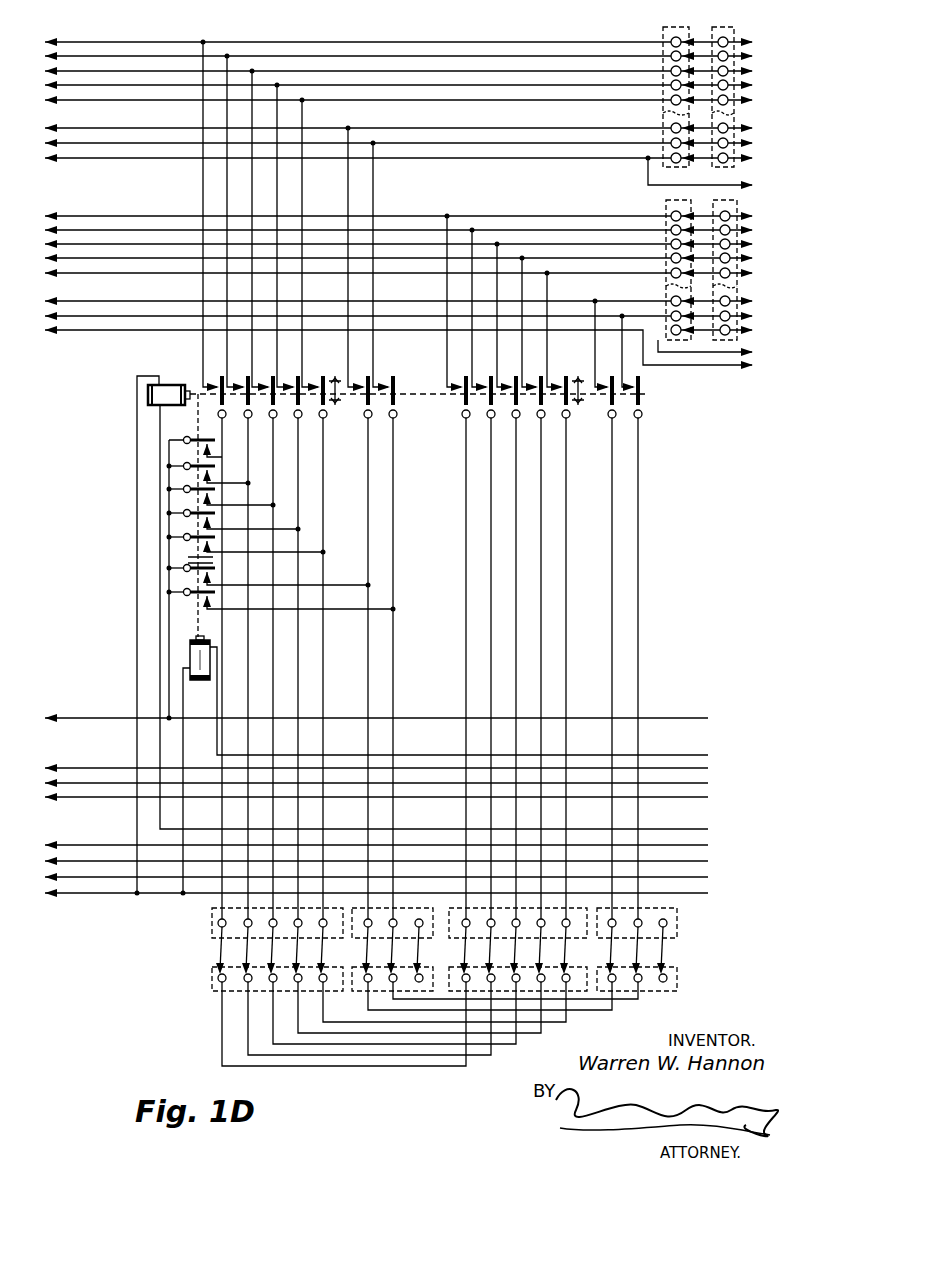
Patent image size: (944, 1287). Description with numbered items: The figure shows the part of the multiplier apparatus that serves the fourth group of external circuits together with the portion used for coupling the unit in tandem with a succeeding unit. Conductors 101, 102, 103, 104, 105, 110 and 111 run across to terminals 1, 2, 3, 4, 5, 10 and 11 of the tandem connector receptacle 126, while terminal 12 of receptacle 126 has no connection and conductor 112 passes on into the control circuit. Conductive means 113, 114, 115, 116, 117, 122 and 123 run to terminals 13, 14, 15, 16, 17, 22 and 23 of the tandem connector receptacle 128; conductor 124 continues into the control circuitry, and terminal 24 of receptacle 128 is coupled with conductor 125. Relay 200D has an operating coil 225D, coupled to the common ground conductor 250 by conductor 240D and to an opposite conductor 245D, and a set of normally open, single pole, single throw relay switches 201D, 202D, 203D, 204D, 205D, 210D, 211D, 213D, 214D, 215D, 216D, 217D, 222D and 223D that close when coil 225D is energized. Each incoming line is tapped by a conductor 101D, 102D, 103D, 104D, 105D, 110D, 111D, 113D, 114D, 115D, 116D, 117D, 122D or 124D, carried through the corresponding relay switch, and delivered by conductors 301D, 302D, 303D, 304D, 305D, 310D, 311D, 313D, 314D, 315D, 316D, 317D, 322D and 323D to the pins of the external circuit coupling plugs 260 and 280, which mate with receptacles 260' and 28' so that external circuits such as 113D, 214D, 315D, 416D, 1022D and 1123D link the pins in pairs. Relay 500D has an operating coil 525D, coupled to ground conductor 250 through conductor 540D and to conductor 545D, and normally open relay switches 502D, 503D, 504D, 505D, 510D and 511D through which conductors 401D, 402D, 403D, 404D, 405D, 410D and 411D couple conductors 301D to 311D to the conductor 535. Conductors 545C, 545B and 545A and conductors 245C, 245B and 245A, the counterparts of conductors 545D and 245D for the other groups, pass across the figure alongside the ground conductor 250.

The conductor 101 is at (69, 45).
The conductor 102 is at (69, 59).
The conductor 103 is at (69, 74).
The conductor 104 is at (69, 88).
The conductor 105 is at (69, 103).
The conductor 110 is at (69, 131).
The conductor 111 is at (69, 146).
The conductor 112 is at (69, 161).
The conductive means 113 is at (69, 219).
The conductive means 114 is at (69, 233).
The conductive means 115 is at (69, 247).
The conductive means 116 is at (69, 261).
The conductive means 117 is at (69, 276).
The conductive means 122 is at (71, 304).
The conductive means 123 is at (71, 319).
The conductor 124 is at (71, 333).
The conductor 125 is at (692, 352).
The tandem connector receptacle 126 is at (672, 24).
The tandem connector receptacle 128 is at (667, 198).
The terminal 1 is at (671, 42).
The terminal 2 is at (671, 56).
The terminal 3 is at (671, 71).
The terminal 4 is at (671, 85).
The terminal 5 is at (671, 100).
The terminal 10 is at (671, 128).
The terminal 11 is at (671, 143).
The terminal 12 is at (671, 158).
The terminal 13 is at (671, 216).
The terminal 14 is at (671, 230).
The terminal 15 is at (671, 244).
The terminal 16 is at (671, 258).
The terminal 17 is at (671, 273).
The terminal 22 is at (671, 301).
The terminal 23 is at (671, 316).
The terminal 24 is at (671, 330).
The conductor 101D is at (203, 186).
The conductor 102D is at (230, 208).
The conductor 103D is at (256, 216).
The conductor 104D is at (282, 198).
The conductor 105D is at (310, 208).
The conductor 110D is at (348, 178).
The conductor 111D is at (373, 200).
The conductor 113D is at (449, 224).
The conductor 114D is at (475, 238).
The conductor 115D is at (514, 254).
The conductor 116D is at (536, 268).
The conductor 117D is at (548, 288).
The conductor 122D is at (596, 312).
The conductor 124D is at (596, 350).
The relay 200D is at (147, 392).
The operating coil 225D is at (165, 375).
The conductor 240D is at (137, 516).
The conductor 245D is at (160, 541).
The conductor 535 is at (86, 717).
The relay switch 201D is at (219, 415).
The relay switch 202D is at (242, 397).
The relay switch 203D is at (269, 397).
The relay switch 204D is at (296, 414).
The relay switch 205D is at (324, 417).
The relay switch 210D is at (364, 420).
The relay switch 211D is at (397, 418).
The relay switch 213D is at (464, 412).
The relay switch 214D is at (487, 416).
The relay switch 215D is at (512, 414).
The relay switch 216D is at (537, 414).
The relay switch 217D is at (563, 416).
The relay switch 222D is at (608, 414).
The relay switch 223D is at (642, 414).
The conductor 301D is at (240, 668).
The conductor 302D is at (265, 668).
The conductor 303D is at (273, 448).
The conductor 304D is at (298, 435).
The conductor 305D is at (323, 486).
The conductor 310D is at (368, 508).
The conductor 311D is at (393, 478).
The conductor 313D is at (466, 471).
The conductor 314D is at (491, 575).
The conductor 315D is at (514, 570).
The conductor 316D is at (541, 546).
The conductor 317D is at (567, 480).
The conductor 322D is at (612, 487).
The conductor 323D is at (638, 479).
The conductor 401D is at (215, 441).
The conductor 402D is at (228, 487).
The conductor 403D is at (252, 510).
The conductor 404D is at (277, 534).
The conductor 405D is at (318, 552).
The conductor 410D is at (333, 593).
The conductor 411D is at (359, 613).
The relay switch 502D is at (191, 459).
The relay switch 503D is at (191, 482).
The relay switch 504D is at (191, 506).
The relay switch 505D is at (191, 530).
The relay switch 510D is at (191, 576).
The relay switch 511D is at (191, 602).
The relay 500D is at (188, 655).
The operating coil 525D is at (200, 669).
The conductor 540D is at (183, 712).
The conductor 545D is at (217, 752).
The conductor 545C is at (81, 769).
The conductor 545B is at (81, 785).
The conductor 545A is at (81, 799).
The conductor 245C is at (83, 847).
The conductor 245B is at (83, 863).
The conductor 245A is at (83, 879).
The common ground conductor 250 is at (89, 895).
The external circuit coupling plug 260 is at (423, 926).
The external circuit coupling receptacle 260' is at (421, 981).
The external circuit coupling plug 280 is at (678, 920).
The external circuit coupling receptacle 28' is at (658, 980).
The external circuit 416D is at (395, 1034).
The external circuit 1022D is at (590, 1011).
The external circuit 1123D is at (636, 999).